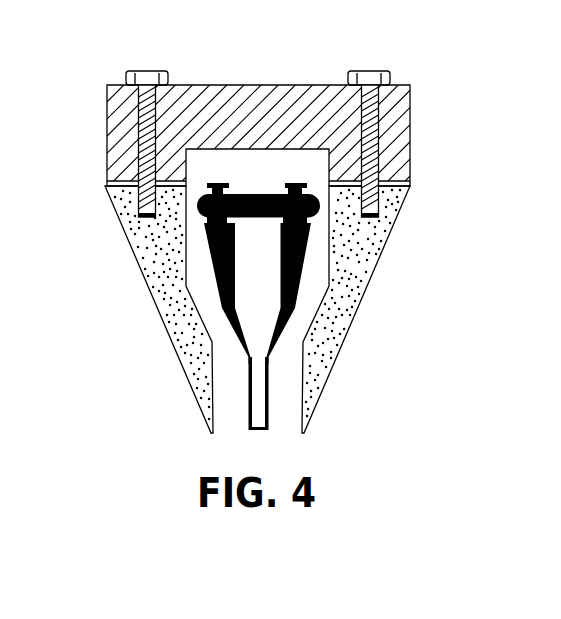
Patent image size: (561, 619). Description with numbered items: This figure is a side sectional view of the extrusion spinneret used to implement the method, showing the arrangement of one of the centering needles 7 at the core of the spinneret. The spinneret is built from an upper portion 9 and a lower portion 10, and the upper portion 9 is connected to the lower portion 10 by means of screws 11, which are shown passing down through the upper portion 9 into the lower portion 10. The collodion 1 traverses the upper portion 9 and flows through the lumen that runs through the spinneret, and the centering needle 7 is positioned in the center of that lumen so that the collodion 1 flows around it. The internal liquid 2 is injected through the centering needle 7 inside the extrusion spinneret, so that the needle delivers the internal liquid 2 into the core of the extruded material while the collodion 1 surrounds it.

The collodion 1 is at (253, 170).
The internal liquid 2 is at (257, 287).
The centering needle 7 is at (283, 334).
The upper portion 9 is at (123, 132).
The lower portion 10 is at (165, 272).
The screw 11 is at (368, 78).